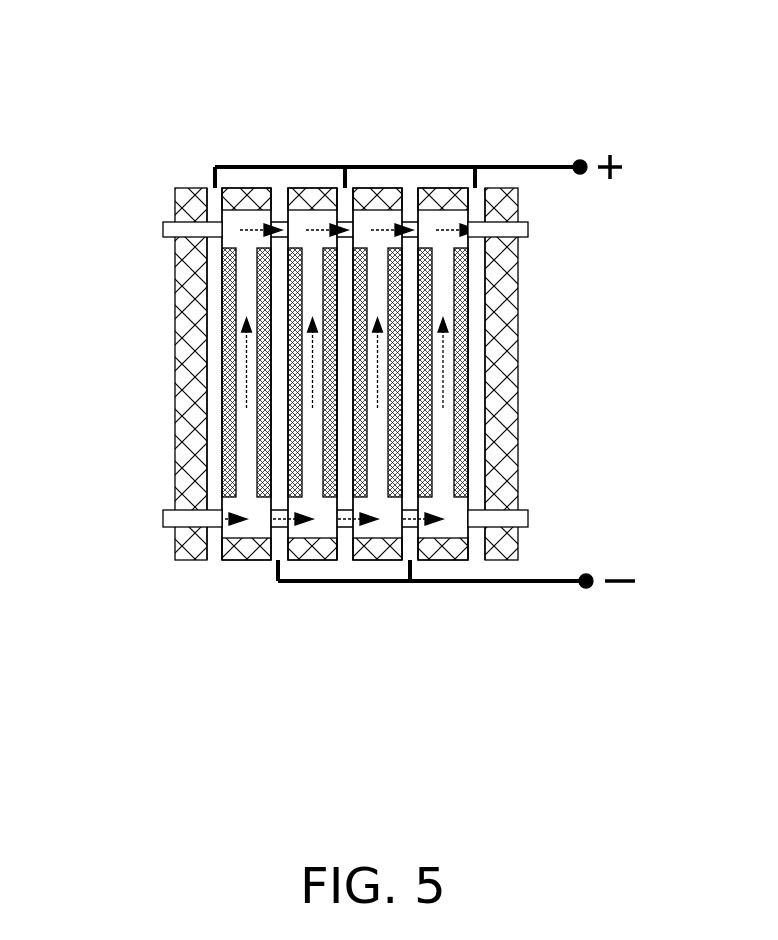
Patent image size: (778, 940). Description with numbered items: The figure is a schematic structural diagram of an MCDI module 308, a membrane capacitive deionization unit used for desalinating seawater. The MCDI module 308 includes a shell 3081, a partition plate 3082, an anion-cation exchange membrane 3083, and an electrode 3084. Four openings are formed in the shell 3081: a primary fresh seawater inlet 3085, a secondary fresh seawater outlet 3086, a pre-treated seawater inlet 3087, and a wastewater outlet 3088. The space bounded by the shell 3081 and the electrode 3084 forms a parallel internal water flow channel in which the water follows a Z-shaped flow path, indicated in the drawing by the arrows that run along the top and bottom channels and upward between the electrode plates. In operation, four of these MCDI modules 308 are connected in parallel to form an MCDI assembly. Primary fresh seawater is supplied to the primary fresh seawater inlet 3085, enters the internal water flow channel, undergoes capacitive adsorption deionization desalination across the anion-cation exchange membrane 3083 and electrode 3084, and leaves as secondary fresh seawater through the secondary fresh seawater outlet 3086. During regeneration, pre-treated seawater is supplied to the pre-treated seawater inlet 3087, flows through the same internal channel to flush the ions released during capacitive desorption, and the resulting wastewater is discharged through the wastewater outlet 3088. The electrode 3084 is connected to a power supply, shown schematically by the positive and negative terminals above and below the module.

The MCDI module 308 is at (196, 172).
The shell 3081 is at (520, 370).
The partition plate 3082 is at (476, 472).
The anion-cation exchange membrane 3083 is at (465, 355).
The electrode 3084 is at (455, 579).
The primary fresh seawater inlet 3085 is at (164, 525).
The secondary fresh seawater outlet 3086 is at (515, 224).
The pre-treated seawater inlet 3087 is at (164, 238).
The wastewater outlet 3088 is at (527, 513).